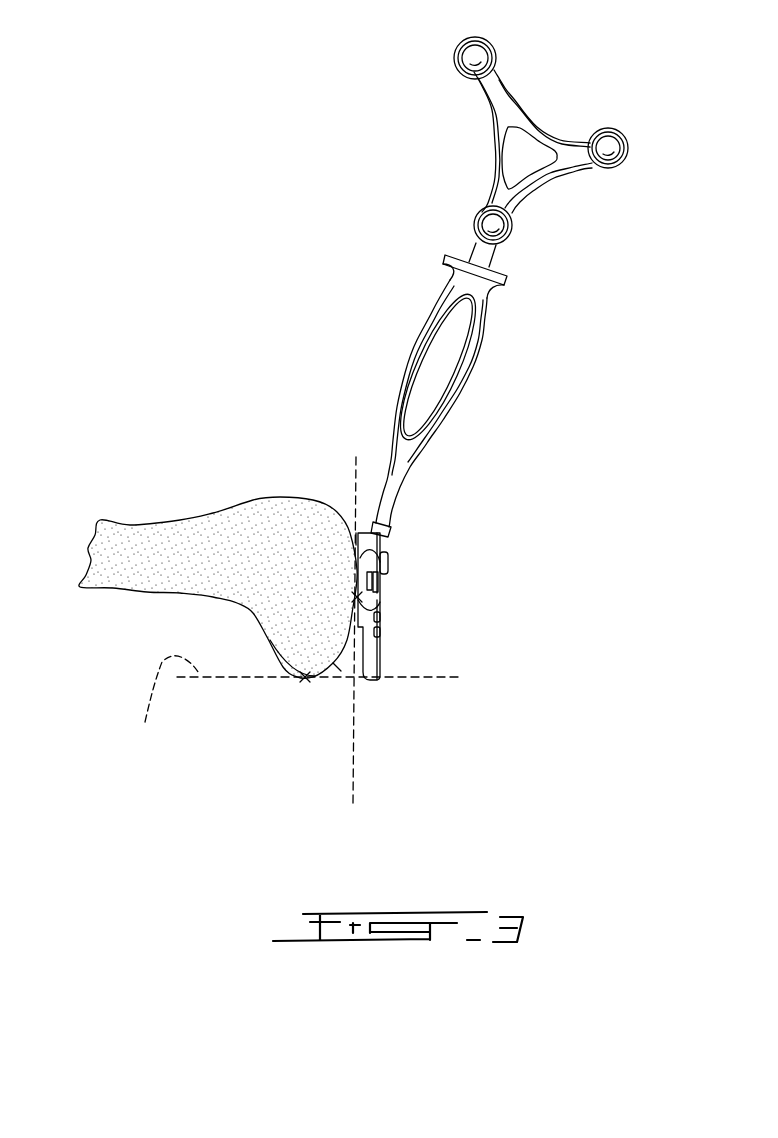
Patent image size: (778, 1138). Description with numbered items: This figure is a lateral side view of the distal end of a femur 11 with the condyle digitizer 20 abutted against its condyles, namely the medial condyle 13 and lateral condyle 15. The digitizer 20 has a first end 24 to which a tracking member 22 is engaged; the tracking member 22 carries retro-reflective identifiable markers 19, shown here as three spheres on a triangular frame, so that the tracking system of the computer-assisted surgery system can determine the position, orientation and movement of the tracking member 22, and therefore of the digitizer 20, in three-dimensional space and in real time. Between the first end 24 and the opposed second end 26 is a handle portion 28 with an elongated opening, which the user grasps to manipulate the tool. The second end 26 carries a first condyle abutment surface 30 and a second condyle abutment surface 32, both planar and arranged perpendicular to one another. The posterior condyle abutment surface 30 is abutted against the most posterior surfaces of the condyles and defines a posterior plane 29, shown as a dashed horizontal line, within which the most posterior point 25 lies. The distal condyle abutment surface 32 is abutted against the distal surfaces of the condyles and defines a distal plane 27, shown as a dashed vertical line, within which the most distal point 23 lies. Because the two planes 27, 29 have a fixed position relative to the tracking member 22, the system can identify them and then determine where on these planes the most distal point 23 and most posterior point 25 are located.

The femur bone 11 is at (200, 513).
The medial condyle 13 is at (233, 721).
The lateral condyle 15 is at (298, 643).
The retro-reflective identifiable markers 19 is at (478, 214).
The digitizer tool 20 is at (545, 276).
The tracking member 22 is at (545, 122).
The most distal point 23 is at (363, 597).
The first end 24 is at (449, 254).
The most posterior point 25 is at (305, 677).
The second end 26 is at (390, 630).
The distal plane 27 is at (353, 792).
The handle portion 28 is at (468, 380).
The posterior plane 29 is at (294, 706).
The first condyle abutment surface 30 is at (337, 667).
The second condyle abutment surface 32 is at (353, 530).